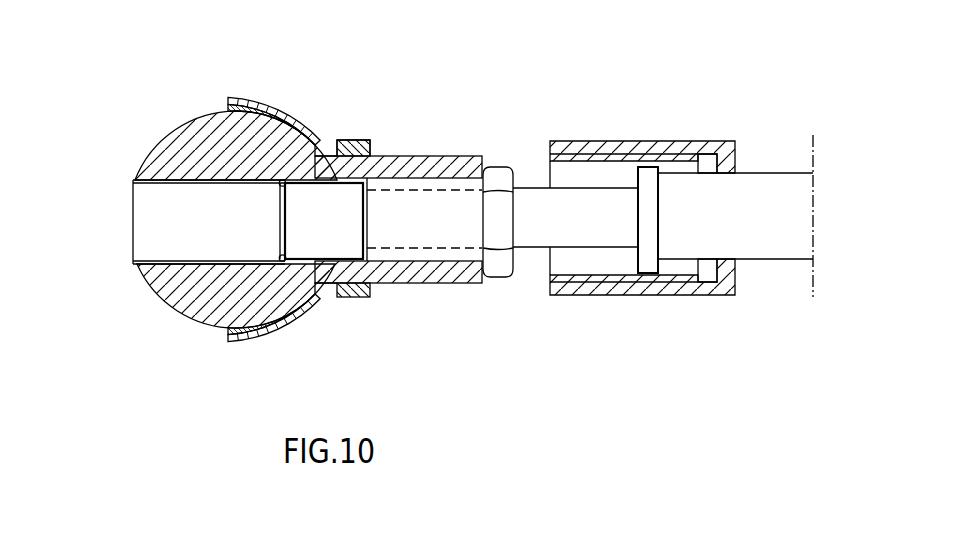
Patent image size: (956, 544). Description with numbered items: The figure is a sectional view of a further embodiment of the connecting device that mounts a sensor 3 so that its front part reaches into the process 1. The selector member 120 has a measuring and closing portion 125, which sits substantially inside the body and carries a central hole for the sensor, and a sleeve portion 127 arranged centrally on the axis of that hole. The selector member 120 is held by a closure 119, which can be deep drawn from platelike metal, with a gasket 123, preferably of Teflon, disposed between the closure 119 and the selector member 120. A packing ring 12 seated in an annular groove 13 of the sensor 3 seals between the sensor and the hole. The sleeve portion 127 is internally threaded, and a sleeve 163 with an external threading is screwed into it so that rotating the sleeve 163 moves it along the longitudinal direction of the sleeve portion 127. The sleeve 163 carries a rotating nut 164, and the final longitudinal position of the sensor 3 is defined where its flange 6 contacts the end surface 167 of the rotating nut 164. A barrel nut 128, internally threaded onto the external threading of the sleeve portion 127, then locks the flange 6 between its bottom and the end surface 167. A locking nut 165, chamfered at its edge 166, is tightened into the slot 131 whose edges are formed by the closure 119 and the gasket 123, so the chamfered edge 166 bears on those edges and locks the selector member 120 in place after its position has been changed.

The process 1 is at (80, 234).
The sensor 3 is at (531, 212).
The flange 6 is at (646, 190).
The packing ring 12 is at (282, 264).
The annular groove 13 is at (278, 227).
The closure 119 is at (246, 102).
The selector member 120 is at (190, 113).
The gasket 123 is at (265, 113).
The measuring and closing portion 125 is at (163, 156).
The sleeve portion 127 is at (408, 168).
The barrel nut 128 is at (703, 147).
The slot 131 is at (323, 150).
The sleeve 163 is at (420, 252).
The rotating nut 164 is at (495, 264).
The locking nut 165 is at (352, 297).
The chamfered edge 166 is at (341, 300).
The end surface 167 is at (520, 187).